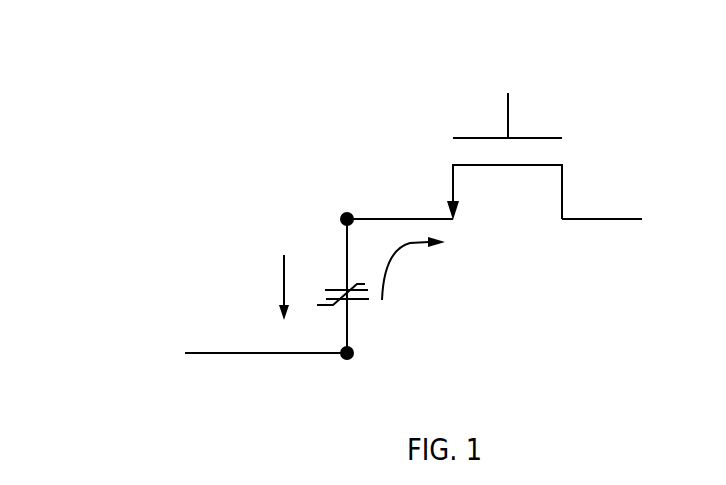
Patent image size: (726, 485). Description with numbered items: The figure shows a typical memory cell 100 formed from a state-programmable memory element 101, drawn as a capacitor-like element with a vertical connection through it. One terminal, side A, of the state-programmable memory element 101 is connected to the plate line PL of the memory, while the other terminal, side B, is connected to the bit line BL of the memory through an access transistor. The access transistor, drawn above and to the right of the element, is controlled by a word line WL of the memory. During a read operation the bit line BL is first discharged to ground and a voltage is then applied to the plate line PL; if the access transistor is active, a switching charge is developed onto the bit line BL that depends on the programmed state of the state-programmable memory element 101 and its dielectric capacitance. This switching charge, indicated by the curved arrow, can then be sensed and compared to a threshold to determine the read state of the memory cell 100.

The memory cell 100 is at (202, 108).
The state-programmable memory element 101 is at (358, 300).
The word line WL is at (507, 98).
The bit line BL is at (619, 220).
The plate line PL is at (248, 355).
The side A is at (347, 369).
The side B is at (396, 202).